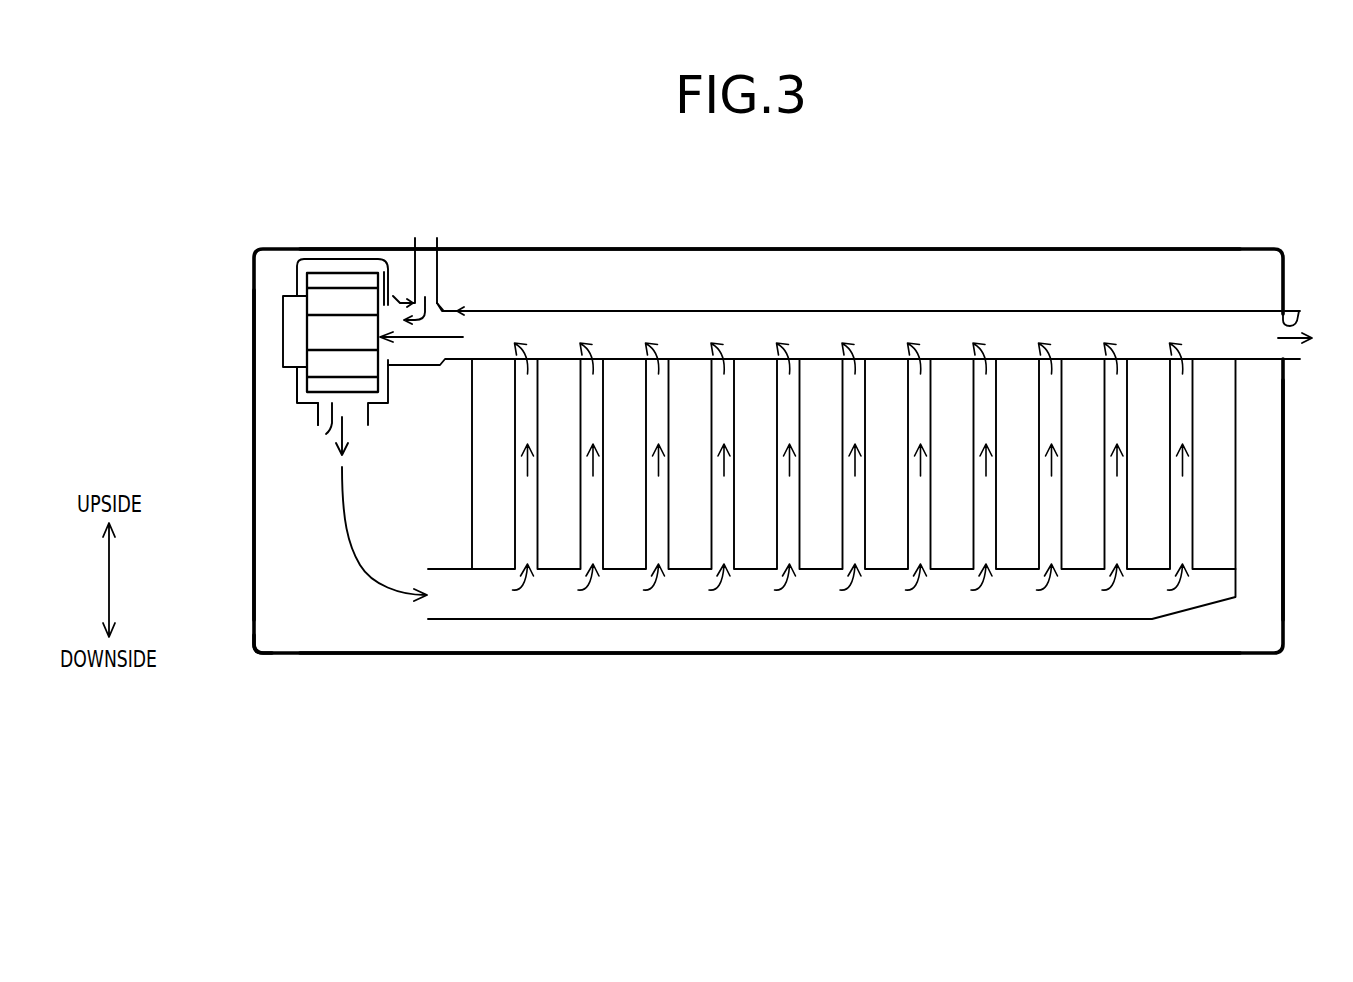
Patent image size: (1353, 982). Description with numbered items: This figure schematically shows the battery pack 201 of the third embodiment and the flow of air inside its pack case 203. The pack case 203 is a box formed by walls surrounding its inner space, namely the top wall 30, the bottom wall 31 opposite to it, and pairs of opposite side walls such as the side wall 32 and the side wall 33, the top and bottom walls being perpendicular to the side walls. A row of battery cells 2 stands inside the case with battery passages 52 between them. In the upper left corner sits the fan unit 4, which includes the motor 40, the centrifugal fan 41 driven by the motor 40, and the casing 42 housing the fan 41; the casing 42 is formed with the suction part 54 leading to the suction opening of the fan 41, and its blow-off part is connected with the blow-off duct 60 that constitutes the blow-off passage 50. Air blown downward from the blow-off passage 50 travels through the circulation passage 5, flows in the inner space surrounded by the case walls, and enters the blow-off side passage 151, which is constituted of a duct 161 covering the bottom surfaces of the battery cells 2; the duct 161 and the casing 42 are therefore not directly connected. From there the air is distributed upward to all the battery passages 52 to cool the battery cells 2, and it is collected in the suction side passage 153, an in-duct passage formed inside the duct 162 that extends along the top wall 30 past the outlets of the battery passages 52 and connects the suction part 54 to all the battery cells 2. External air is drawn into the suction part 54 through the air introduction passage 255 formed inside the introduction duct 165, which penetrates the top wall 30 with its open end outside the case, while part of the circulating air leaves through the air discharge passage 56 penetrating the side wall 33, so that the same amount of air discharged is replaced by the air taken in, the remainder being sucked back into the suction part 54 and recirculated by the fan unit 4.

The battery pack 201 is at (1233, 226).
The top wall 30 is at (703, 247).
The bottom wall 31 is at (828, 657).
The side wall 32 is at (253, 519).
The side wall 33 is at (1284, 528).
The pack case 203 is at (246, 661).
The air discharge passage 56 is at (1299, 311).
The duct 162 is at (1090, 310).
The suction side passage 153 is at (888, 334).
The battery cell 2 is at (820, 370).
The battery passage 52 is at (1118, 428).
The blow-off side passage 151 is at (960, 597).
The duct 161 is at (1087, 623).
The fan unit 4 is at (286, 258).
The suction part 54 is at (385, 268).
The fan 41 is at (320, 272).
The motor 40 is at (288, 325).
The casing 42 is at (297, 382).
The blow-off duct 60 is at (317, 409).
The blow-off passage 50 is at (326, 434).
The air introduction passage 255 is at (418, 261).
The introduction duct 165 is at (465, 261).
The circulation passage 5 is at (350, 557).